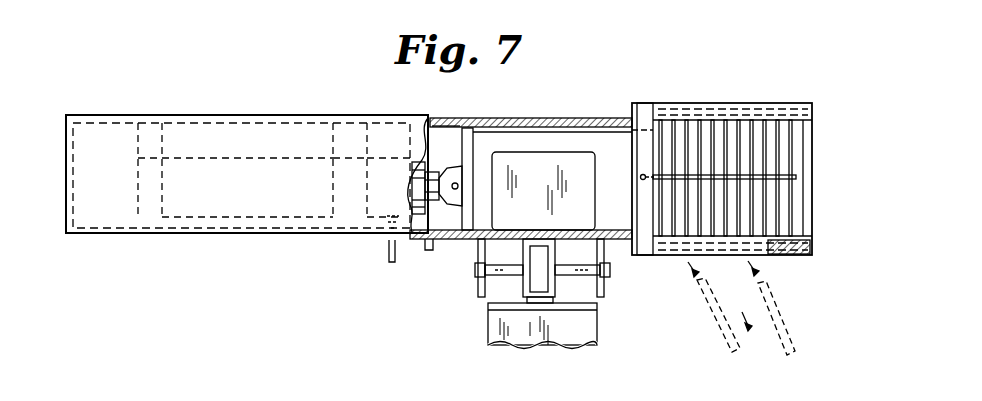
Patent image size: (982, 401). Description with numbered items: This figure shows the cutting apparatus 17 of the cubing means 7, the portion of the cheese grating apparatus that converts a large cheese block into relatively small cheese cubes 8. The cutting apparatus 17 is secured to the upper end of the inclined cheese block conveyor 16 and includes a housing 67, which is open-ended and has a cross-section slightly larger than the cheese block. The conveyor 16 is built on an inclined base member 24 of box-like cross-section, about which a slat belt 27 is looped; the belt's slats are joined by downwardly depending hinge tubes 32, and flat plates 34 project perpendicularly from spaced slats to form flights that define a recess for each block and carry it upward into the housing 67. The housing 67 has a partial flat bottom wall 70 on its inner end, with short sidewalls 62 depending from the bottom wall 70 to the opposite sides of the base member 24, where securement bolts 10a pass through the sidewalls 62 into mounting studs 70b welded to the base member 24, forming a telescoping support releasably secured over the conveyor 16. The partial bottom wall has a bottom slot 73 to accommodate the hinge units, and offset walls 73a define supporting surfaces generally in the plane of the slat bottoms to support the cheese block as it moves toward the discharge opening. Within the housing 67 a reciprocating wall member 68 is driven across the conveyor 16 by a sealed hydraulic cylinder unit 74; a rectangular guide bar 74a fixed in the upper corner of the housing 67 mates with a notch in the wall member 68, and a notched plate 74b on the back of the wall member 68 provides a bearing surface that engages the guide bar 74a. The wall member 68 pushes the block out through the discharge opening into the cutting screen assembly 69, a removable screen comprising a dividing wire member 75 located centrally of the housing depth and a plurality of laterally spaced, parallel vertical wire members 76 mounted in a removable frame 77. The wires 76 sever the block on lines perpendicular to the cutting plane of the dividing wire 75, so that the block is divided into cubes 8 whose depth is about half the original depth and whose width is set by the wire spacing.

The cubing means 7 is at (679, 99).
The cheese cubes 8 is at (790, 355).
The conveyor portion 10a is at (478, 270).
The cheese block conveyor 16 is at (572, 232).
The cutting apparatus 17 is at (203, 246).
The inclined base member 24 is at (605, 292).
The slat belt 27 is at (488, 305).
The hinge tube 32 is at (540, 230).
The flat plates 34 is at (572, 160).
The sidewalls 62 is at (480, 282).
The housing 67 is at (356, 117).
The reciprocating wall member 68 is at (480, 148).
The cutting screen assembly 69 is at (810, 135).
The bottom wall 70 is at (412, 234).
The mounting studs 70b is at (522, 271).
The bottom slot 73 is at (522, 230).
The offset walls 73a is at (478, 246).
The hydraulic cylinder unit 74 is at (418, 236).
The guide bar 74a is at (448, 128).
The plate 74b is at (463, 145).
The dividing wire member 75 is at (770, 180).
The wire members 76 is at (728, 132).
The frame 77 is at (648, 158).